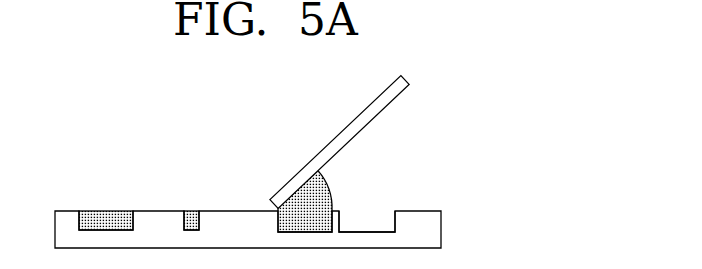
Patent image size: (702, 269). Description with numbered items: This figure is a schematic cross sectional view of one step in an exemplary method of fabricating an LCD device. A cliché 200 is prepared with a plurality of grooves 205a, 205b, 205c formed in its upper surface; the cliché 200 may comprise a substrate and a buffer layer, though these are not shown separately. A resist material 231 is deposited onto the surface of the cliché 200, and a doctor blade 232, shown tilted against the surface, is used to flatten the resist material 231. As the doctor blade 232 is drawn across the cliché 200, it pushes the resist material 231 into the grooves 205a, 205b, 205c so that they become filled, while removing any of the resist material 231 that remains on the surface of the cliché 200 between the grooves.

The cliché 200 is at (435, 230).
The groove 205a is at (103, 214).
The groove 205b is at (193, 213).
The groove 205c is at (367, 220).
The resist material 231 is at (322, 197).
The doctor blade 232 is at (350, 132).